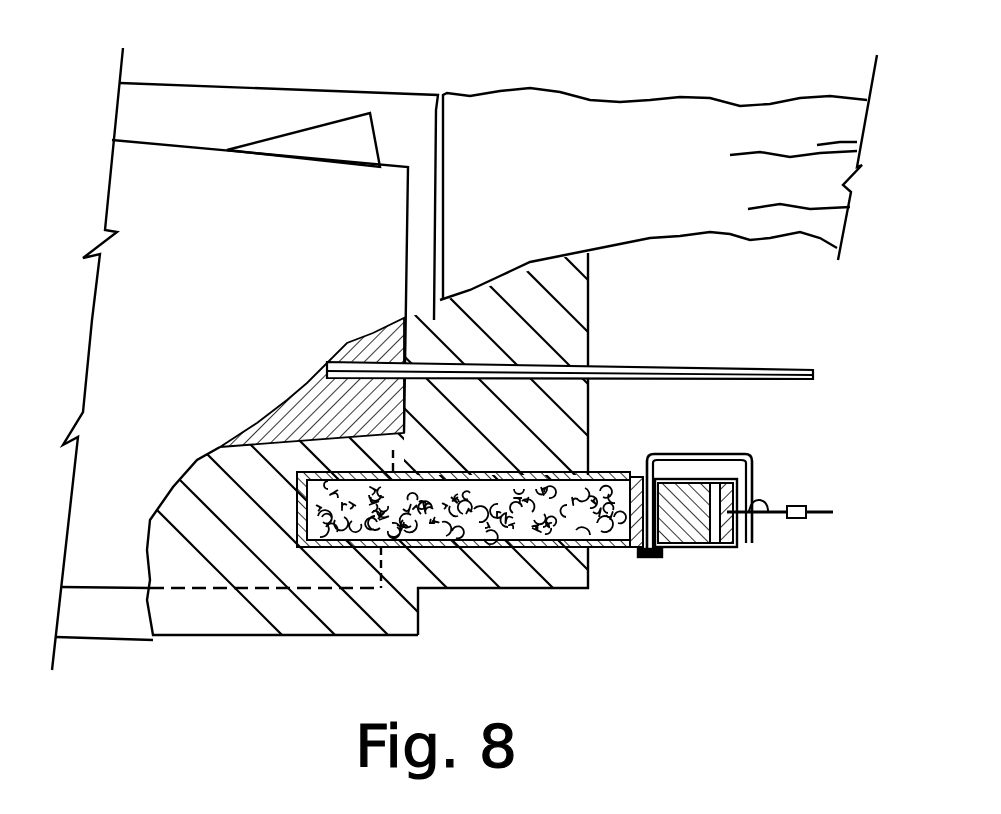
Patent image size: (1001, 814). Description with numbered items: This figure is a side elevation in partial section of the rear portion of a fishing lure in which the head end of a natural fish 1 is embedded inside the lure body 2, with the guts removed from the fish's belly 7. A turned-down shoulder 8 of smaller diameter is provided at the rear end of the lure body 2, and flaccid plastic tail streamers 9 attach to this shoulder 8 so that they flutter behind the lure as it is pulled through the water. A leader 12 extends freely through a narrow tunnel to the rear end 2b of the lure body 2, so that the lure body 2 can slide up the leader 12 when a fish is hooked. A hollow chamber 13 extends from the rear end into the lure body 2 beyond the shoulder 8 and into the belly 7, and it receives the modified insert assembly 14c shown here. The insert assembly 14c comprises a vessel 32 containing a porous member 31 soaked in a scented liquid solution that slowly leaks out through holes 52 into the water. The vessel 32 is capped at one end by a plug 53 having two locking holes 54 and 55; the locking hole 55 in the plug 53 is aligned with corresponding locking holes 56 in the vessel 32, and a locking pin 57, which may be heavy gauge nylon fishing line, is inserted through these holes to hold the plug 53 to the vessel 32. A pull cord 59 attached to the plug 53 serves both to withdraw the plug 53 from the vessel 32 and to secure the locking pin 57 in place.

The natural fish 1 is at (197, 170).
The tail streamers 9 is at (715, 122).
The rear end of the lure body 2b is at (588, 297).
The leader 12 is at (735, 372).
The lure body 2 is at (323, 630).
The hollow chamber 13 is at (310, 545).
The belly 7 is at (173, 583).
The shoulder 8 is at (453, 588).
The vessel 32 is at (403, 543).
The holes 52 is at (610, 475).
The porous member 31 is at (493, 523).
The locking hole 55 is at (635, 477).
The locking holes 56 is at (627, 548).
The locking pin 57 is at (738, 455).
The plug 53 is at (683, 480).
The locking hole 54 is at (713, 543).
The insert assembly 14c is at (707, 580).
The pull cord 59 is at (776, 513).